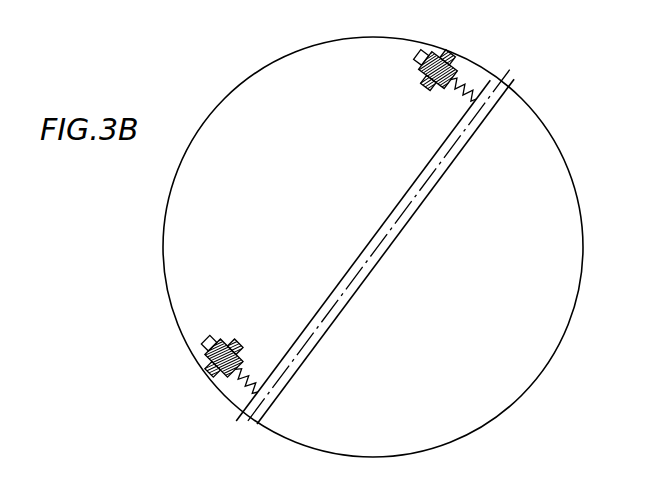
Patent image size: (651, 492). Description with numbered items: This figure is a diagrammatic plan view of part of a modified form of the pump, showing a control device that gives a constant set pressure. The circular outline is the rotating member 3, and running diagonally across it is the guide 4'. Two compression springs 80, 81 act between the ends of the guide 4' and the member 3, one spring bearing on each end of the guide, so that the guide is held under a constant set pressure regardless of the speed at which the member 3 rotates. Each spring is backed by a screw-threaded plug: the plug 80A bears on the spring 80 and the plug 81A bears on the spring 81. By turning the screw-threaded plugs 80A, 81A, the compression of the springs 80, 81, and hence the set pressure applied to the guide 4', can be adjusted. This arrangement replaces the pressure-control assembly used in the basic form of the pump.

The member 3 is at (557, 163).
The guide 4' is at (375, 247).
The compression spring 80 is at (471, 79).
The screw-threaded plug 80A is at (435, 58).
The compression spring 81 is at (231, 383).
The screw-threaded plug 81A is at (207, 352).